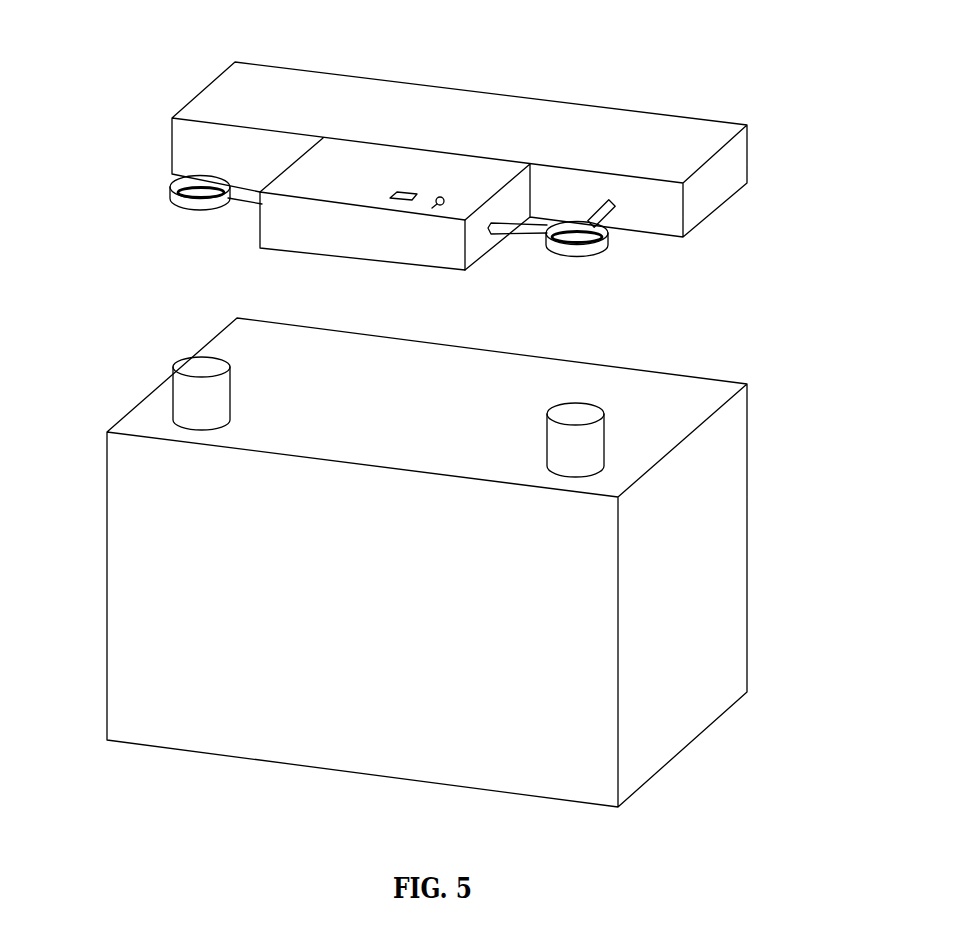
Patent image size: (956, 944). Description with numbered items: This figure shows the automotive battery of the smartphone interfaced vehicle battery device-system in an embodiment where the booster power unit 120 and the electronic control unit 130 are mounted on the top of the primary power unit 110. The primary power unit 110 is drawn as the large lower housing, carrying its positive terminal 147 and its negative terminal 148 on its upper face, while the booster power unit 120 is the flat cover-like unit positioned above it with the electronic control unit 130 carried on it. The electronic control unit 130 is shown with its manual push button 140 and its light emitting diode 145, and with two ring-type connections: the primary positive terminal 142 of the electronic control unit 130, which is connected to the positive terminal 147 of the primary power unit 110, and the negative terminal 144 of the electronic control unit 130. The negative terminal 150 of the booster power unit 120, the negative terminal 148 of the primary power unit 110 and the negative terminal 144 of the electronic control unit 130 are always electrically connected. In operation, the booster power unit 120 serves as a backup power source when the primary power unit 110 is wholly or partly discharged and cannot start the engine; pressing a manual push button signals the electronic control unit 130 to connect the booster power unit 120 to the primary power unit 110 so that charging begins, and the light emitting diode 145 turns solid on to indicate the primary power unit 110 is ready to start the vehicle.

The primary power unit 110 is at (655, 687).
The booster power unit 120 is at (457, 131).
The electronic control unit 130 is at (342, 183).
The manual push button 140 is at (390, 197).
The primary positive terminal 142 is at (245, 202).
The negative terminal 144 is at (520, 238).
The light emitting diode 145 is at (437, 204).
The positive terminal of primary power unit 147 is at (187, 398).
The negative terminal of primary power unit 148 is at (577, 440).
The negative terminal of booster power unit 150 is at (597, 224).